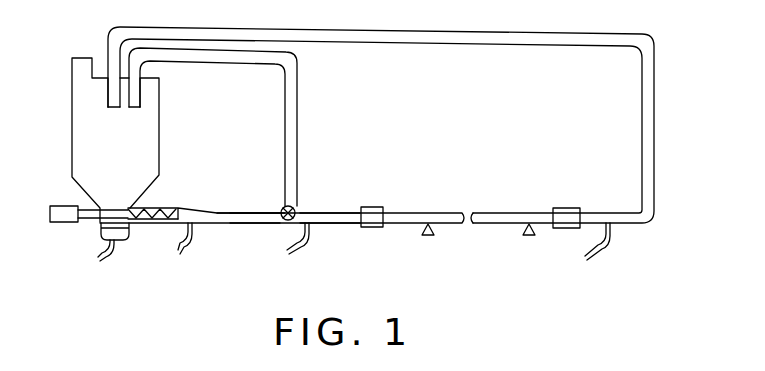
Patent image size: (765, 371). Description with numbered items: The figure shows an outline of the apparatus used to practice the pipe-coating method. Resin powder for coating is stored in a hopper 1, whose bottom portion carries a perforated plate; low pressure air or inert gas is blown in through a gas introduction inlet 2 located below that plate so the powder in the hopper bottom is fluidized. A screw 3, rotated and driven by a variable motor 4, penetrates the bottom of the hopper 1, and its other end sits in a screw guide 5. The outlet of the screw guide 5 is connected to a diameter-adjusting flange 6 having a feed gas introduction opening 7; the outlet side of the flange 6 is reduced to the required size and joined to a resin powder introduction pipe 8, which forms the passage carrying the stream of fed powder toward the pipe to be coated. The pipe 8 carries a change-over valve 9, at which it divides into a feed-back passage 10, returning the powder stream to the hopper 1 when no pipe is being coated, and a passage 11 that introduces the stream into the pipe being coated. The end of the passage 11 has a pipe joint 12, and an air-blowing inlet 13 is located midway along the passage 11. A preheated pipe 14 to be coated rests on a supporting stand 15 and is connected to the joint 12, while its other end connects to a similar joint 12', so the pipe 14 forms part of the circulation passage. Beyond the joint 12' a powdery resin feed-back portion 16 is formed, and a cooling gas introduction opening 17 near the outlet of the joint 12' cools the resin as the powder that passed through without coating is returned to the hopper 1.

The hopper 1 is at (72, 99).
The gas introduction inlet 2 is at (104, 258).
The screw 3 is at (140, 222).
The variable motor 4 is at (58, 222).
The screw guide 5 is at (166, 207).
The diameter-adjusting flange 6 is at (210, 224).
The feed gas introduction opening 7 is at (184, 256).
The resin powder introduction pipe 8 is at (247, 224).
The change-over valve 9 is at (296, 208).
The feed-back passage 10 is at (298, 118).
The passage 11 is at (334, 224).
The pipe joint 12 is at (372, 235).
The pipe joint 12' is at (567, 201).
The air-blowing inlet 13 is at (303, 255).
The preheated pipe 14 is at (490, 224).
The supporting stand 15 is at (428, 243).
The powdery resin feed-back portion 16 is at (655, 157).
The cooling gas introduction opening 17 is at (611, 247).